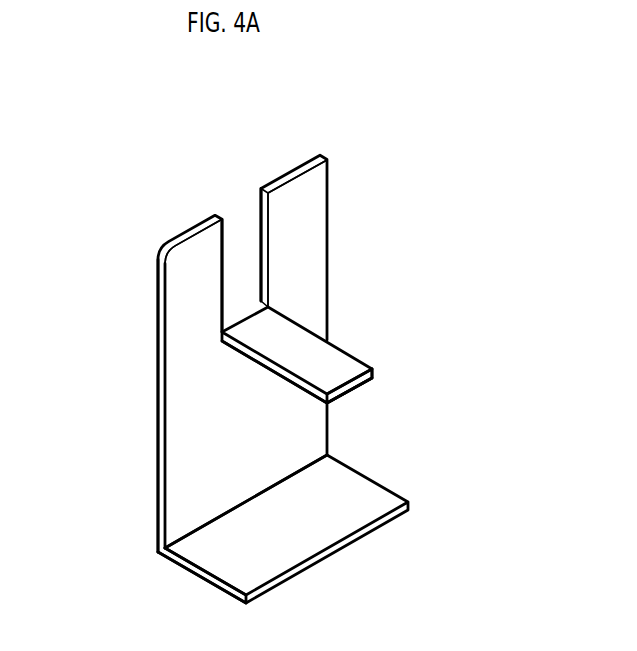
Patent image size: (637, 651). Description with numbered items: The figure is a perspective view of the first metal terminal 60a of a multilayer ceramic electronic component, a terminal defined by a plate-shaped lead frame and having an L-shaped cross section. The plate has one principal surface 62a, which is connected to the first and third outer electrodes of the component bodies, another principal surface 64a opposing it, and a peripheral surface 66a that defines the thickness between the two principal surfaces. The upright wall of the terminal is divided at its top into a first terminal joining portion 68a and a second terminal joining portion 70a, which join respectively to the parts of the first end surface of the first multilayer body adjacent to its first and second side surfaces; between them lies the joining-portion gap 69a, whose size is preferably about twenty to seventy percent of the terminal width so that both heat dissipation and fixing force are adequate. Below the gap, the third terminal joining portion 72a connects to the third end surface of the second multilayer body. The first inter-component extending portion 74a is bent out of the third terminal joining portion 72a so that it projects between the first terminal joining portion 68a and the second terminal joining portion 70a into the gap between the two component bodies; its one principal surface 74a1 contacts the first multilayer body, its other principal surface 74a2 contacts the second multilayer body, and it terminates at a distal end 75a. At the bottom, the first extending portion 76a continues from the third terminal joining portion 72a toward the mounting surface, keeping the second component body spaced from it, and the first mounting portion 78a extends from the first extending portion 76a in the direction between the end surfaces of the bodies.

The first metal terminal 60a is at (115, 217).
The one principal surface 62a is at (187, 487).
The other principal surface 64a is at (187, 452).
The peripheral surface 66a is at (163, 325).
The first terminal joining portion 68a is at (192, 267).
The joining-portion gap 69a is at (270, 228).
The second terminal joining portion 70a is at (300, 202).
The third terminal joining portion 72a is at (237, 383).
The first inter-component extending portion 74a is at (345, 350).
The one principal surface of the first inter-component extending portion 74a1 is at (347, 363).
The other principal surface of the first inter-component extending portion 74a2 is at (300, 383).
The distal end 75a is at (365, 378).
The first extending portion 76a is at (253, 462).
The first mounting portion 78a is at (233, 565).